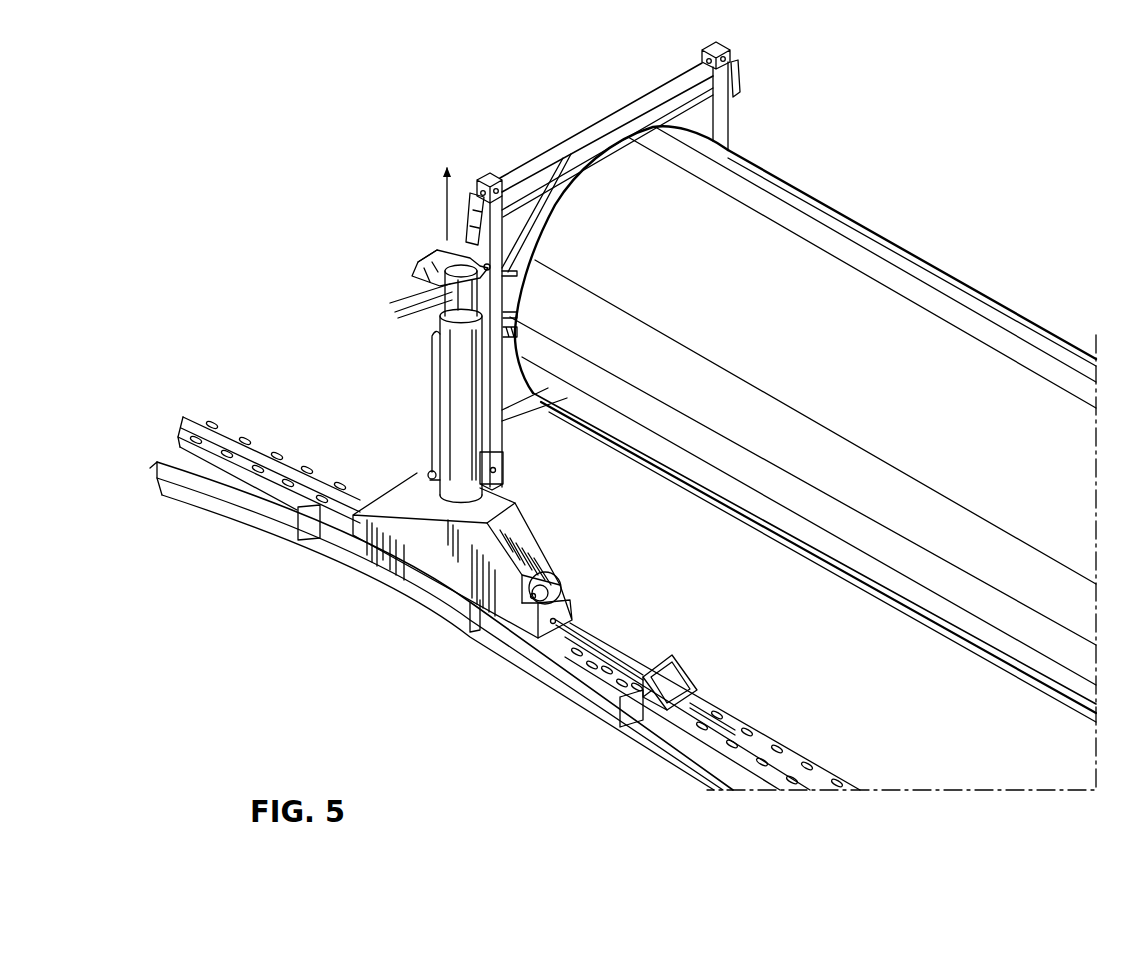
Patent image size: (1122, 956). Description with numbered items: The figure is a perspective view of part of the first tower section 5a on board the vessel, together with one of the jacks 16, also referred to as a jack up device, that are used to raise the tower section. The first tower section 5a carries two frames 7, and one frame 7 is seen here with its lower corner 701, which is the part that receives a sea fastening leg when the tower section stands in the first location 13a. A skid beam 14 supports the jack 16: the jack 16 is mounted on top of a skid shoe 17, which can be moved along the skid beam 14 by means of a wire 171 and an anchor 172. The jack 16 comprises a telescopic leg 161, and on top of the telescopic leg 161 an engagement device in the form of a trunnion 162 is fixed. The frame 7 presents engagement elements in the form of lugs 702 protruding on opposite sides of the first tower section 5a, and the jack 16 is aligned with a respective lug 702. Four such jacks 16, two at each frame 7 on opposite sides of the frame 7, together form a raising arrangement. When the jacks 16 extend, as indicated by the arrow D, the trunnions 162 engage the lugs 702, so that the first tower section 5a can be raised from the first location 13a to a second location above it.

The first tower section 5a is at (889, 391).
The frame 7 is at (542, 158).
The lug 702 is at (485, 231).
The lower corner 701 is at (504, 465).
The jack 16 is at (425, 380).
The telescopic leg 161 is at (457, 408).
The trunnion 162 is at (447, 252).
The skid shoe 17 is at (411, 478).
The wire 171 is at (604, 648).
The anchor 172 is at (683, 679).
The skid beam 14 is at (258, 500).
The first location 13a is at (901, 562).
The arrow indicating jack extension D is at (445, 204).